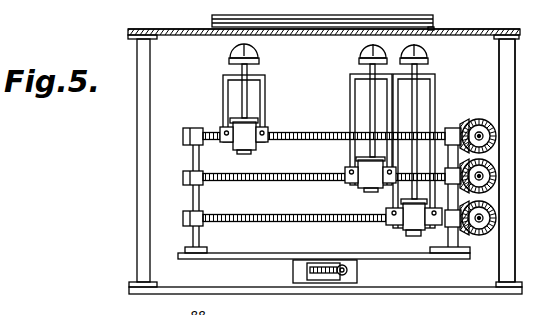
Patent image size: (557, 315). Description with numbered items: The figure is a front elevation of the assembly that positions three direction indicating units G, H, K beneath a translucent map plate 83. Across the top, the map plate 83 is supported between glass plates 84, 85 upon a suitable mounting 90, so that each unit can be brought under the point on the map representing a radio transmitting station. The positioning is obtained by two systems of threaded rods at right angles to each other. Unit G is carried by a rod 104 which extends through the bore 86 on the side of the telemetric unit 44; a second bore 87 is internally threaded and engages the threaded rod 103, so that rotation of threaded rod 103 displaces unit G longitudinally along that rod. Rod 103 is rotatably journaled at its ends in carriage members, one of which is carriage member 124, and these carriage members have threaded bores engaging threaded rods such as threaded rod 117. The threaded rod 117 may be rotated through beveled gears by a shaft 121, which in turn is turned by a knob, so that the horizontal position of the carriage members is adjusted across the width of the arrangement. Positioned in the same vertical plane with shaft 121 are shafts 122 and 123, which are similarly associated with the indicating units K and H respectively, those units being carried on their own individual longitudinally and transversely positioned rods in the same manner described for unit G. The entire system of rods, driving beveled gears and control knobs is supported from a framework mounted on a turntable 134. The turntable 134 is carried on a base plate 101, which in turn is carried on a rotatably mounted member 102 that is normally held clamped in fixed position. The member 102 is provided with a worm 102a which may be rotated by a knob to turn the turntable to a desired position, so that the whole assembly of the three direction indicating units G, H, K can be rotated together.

The glass plate 84 is at (421, 22).
The glass plate 85 is at (212, 27).
The translucent map plate 83 is at (438, 28).
The mounting 90 is at (501, 30).
The direction indicating unit G is at (256, 44).
The direction indicating unit H is at (360, 51).
The direction indicating unit K is at (428, 51).
The threaded rod 117 is at (327, 131).
The threaded rod 103 is at (233, 143).
The rod 104 is at (276, 143).
The turntable 134 is at (259, 254).
The telemetric unit 44 is at (248, 154).
The bore 87 is at (225, 128).
The bore 86 is at (266, 129).
The carriage member 124 is at (268, 131).
The shaft 121 is at (483, 136).
The shaft 123 is at (483, 176).
The shaft 122 is at (483, 218).
The base plate 101 is at (307, 277).
The rotatably mounted member 102 is at (307, 267).
The worm 102a is at (348, 270).